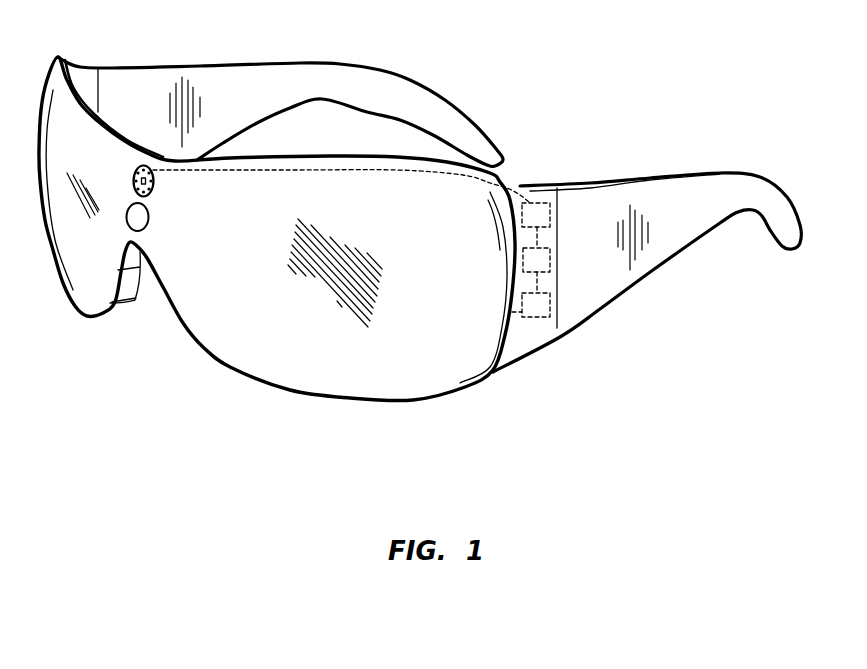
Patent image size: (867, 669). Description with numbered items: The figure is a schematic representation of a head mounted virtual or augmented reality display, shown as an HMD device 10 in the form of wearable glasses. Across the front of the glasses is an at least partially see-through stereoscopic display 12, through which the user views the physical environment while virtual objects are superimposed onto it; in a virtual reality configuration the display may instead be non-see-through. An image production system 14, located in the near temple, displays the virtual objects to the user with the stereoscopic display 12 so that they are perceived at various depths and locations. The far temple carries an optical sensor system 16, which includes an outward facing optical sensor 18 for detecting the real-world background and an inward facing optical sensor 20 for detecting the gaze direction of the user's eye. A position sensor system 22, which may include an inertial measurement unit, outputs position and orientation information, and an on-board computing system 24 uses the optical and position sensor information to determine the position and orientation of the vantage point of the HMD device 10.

The HMD device 10 is at (462, 52).
The at least partially see-through stereoscopic display 12 is at (209, 318).
The image production system 14 is at (547, 302).
The optical sensor system 16 is at (154, 141).
The outward facing optical sensor 18 is at (153, 189).
The inward facing optical sensor 20 is at (148, 225).
The position sensor system 22 is at (543, 253).
The on-board computing system 24 is at (528, 212).